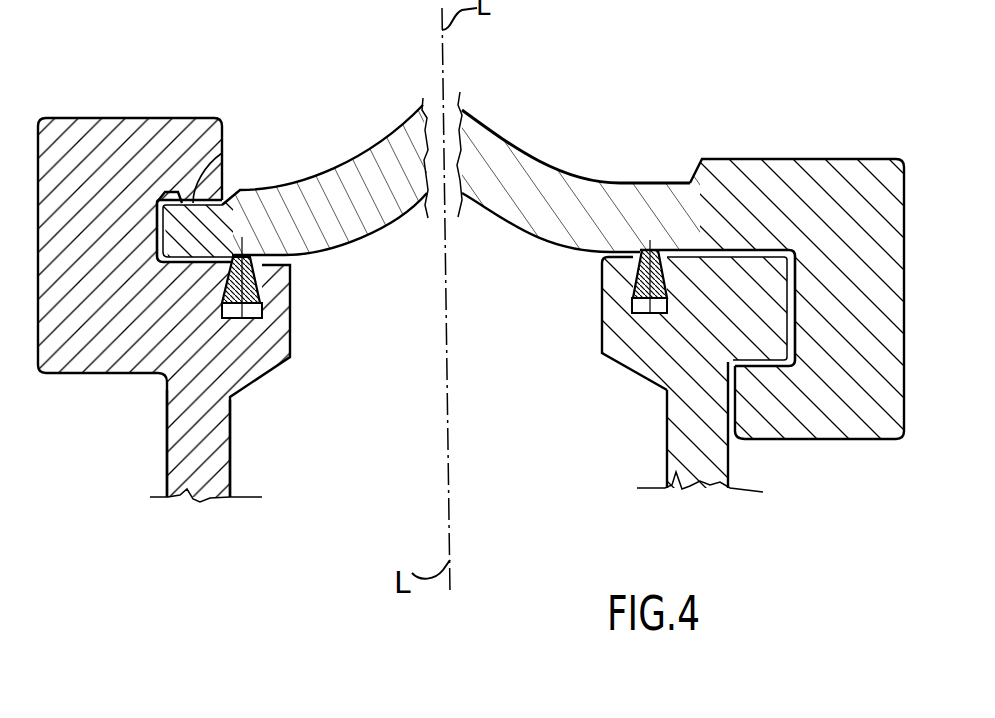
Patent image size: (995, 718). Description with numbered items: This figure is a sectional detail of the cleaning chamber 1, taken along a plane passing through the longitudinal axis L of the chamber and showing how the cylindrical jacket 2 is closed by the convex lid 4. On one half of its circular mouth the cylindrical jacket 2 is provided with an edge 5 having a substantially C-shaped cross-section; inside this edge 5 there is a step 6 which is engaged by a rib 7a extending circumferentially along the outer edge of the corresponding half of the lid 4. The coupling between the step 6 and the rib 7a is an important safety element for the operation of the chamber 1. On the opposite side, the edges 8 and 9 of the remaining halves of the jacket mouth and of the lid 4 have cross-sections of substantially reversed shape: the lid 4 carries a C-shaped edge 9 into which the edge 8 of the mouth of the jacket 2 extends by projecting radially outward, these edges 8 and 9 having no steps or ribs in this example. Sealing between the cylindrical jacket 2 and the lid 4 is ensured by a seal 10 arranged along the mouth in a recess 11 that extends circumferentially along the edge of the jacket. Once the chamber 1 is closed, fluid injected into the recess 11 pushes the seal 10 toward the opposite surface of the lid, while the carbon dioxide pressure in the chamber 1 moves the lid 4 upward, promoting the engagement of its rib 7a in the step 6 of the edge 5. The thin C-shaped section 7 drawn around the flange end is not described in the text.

The chamber 1 is at (500, 436).
The cylindrical jacket 2 is at (215, 462).
The lid 4 is at (532, 212).
The edge 5 is at (158, 133).
The step 6 is at (222, 153).
The channel ring 7 is at (197, 230).
The rib 7a is at (163, 197).
The edge 8 is at (765, 338).
The edge 9 is at (857, 320).
The seal 10 is at (245, 288).
The recess 11 is at (250, 318).